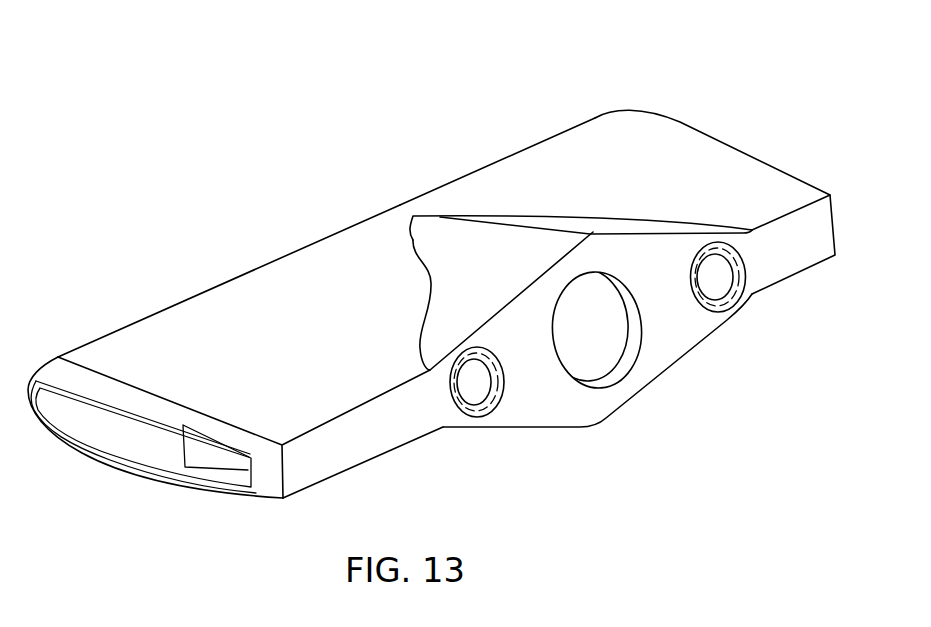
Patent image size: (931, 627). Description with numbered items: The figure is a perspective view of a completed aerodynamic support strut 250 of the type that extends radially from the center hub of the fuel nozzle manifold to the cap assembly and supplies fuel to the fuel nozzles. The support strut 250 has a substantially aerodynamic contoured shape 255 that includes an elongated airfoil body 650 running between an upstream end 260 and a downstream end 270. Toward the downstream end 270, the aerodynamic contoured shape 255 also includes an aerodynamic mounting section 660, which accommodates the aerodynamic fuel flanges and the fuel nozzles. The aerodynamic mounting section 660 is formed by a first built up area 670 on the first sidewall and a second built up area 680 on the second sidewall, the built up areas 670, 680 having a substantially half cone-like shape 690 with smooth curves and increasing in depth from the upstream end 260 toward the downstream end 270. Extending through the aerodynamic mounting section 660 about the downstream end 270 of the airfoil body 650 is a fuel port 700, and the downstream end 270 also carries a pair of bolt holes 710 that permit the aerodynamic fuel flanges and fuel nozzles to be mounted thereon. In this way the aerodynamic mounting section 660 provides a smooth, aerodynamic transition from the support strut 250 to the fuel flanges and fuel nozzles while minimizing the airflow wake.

The support strut 250 is at (631, 100).
The aerodynamic contoured shape 255 is at (718, 136).
The upstream end 260 is at (138, 320).
The downstream end 270 is at (340, 473).
The airfoil body 650 is at (525, 148).
The aerodynamic mounting section 660 is at (418, 285).
The first built up area 670 is at (502, 220).
The second built up area 680 is at (543, 430).
The half cone-like shape 690 is at (417, 213).
The fuel port 700 is at (641, 348).
The bolt holes 710 is at (497, 404).